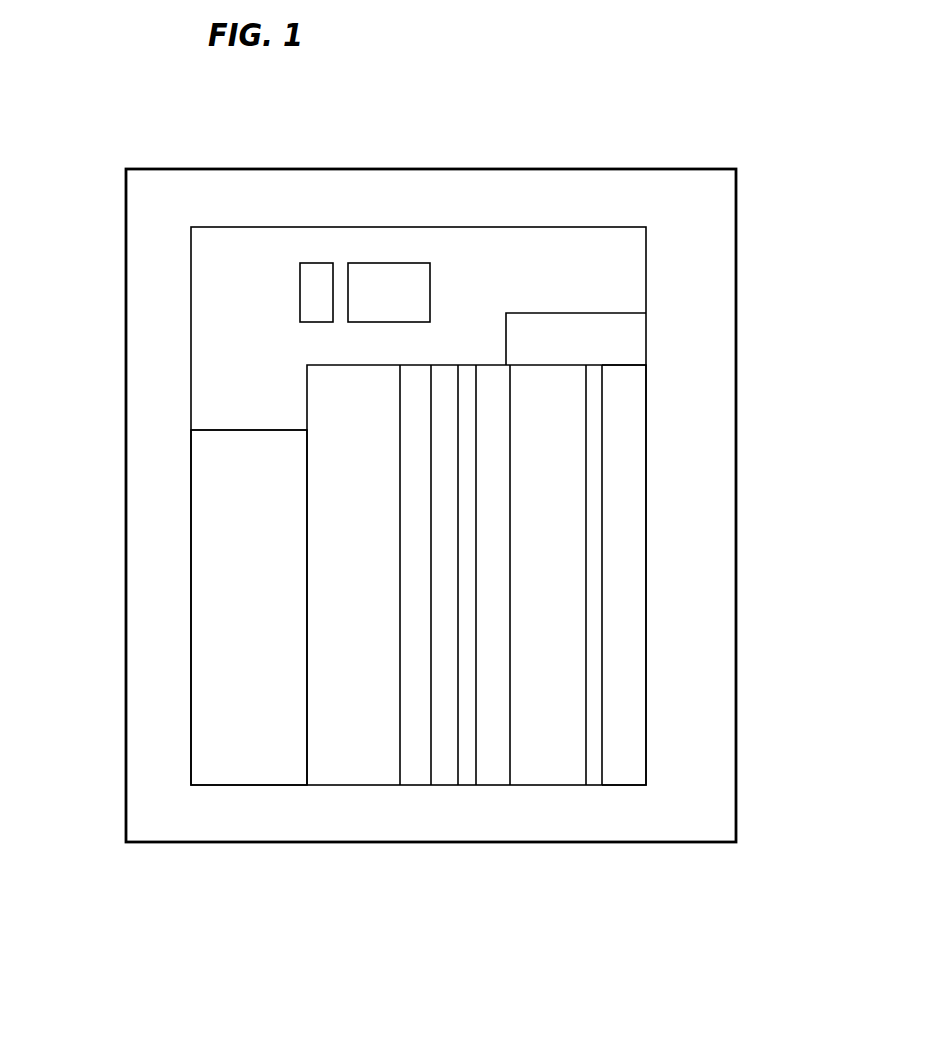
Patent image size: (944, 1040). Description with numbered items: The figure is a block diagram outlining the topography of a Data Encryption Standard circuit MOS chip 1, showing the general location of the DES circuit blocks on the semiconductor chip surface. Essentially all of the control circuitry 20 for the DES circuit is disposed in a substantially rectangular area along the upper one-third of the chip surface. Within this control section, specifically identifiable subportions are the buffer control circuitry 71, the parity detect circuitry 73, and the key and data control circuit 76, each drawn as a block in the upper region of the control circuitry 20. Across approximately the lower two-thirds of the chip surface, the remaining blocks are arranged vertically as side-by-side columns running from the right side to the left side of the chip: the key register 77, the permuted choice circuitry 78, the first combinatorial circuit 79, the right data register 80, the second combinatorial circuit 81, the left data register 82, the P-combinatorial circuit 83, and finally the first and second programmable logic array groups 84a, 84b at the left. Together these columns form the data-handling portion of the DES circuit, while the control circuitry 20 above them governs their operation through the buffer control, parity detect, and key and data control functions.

The data encryption device 1 is at (736, 503).
The control circuitry 20 is at (635, 265).
The buffer control circuitry 71 is at (320, 273).
The parity detect circuitry 73 is at (387, 275).
The key and data control circuit 76 is at (633, 350).
The key register 77 is at (630, 632).
The permuted choice circuitry 78 is at (597, 693).
The first combinatorial circuit 79 is at (578, 747).
The right data register 80 is at (503, 752).
The second combinatorial circuit 81 is at (467, 775).
The left data register 82 is at (443, 773).
The P-combinatorial circuit 83 is at (410, 735).
The first programmable logic array group 84a is at (318, 738).
The second programmable logic array group 84b is at (203, 683).